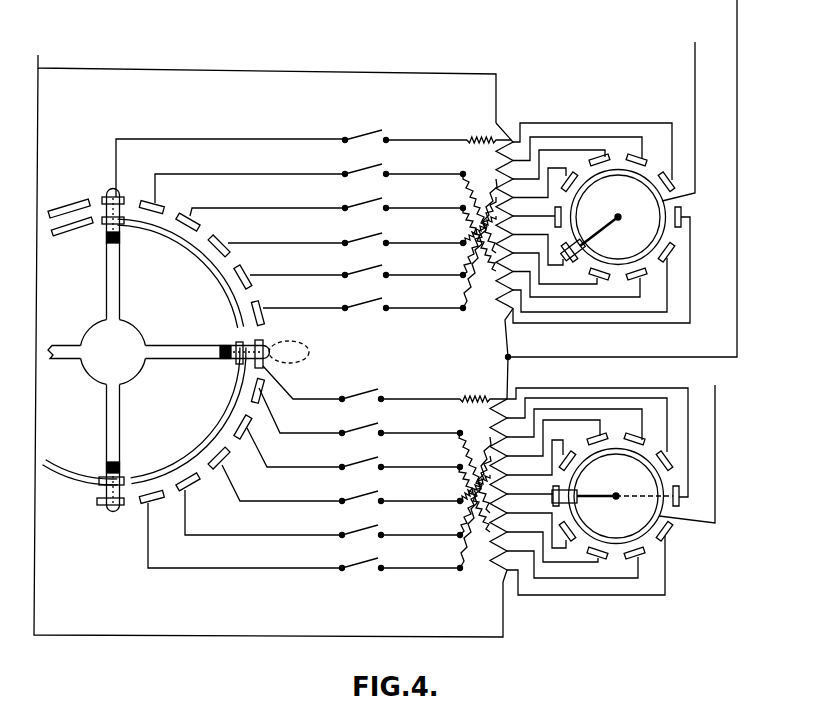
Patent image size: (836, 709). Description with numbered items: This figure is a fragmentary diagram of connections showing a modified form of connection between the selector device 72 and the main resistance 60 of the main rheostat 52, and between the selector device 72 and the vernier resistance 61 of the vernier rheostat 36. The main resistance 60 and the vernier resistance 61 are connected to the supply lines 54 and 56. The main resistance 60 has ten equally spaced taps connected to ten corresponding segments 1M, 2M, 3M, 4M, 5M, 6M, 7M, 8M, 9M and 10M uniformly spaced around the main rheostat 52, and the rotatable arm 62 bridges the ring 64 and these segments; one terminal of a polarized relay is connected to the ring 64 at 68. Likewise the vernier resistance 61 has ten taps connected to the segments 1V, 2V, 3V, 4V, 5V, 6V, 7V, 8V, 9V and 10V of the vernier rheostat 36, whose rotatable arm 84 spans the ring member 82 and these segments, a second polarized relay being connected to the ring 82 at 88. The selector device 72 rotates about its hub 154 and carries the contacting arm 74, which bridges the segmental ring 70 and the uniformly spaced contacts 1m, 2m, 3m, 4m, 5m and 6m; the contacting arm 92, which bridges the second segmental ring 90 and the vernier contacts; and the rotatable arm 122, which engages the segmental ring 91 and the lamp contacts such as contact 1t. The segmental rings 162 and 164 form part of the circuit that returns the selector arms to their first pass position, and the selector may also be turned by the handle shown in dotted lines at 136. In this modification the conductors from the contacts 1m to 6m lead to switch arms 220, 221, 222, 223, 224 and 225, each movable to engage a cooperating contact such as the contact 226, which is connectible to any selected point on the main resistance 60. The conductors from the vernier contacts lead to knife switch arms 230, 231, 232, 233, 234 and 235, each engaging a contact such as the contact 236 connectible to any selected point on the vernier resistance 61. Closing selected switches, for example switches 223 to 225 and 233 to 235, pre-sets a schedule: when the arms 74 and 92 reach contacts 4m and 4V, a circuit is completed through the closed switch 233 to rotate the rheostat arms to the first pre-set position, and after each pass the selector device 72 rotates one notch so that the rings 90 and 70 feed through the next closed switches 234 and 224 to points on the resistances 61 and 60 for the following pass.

The supply line 54 is at (38, 128).
The supply line 56 is at (737, 331).
The main resistance 60 is at (503, 127).
The vernier resistance 61 is at (500, 395).
The rotatable arm of the main rheostat 62 is at (600, 230).
The ring 64 is at (654, 242).
The connection point on ring 68 is at (663, 201).
The segmental ring 70 is at (204, 258).
The selector device 72 is at (160, 346).
The contacting rotatable arm 74 is at (120, 216).
The ring member 82 is at (600, 504).
The rotatable arm of the vernier rheostat 84 is at (594, 494).
The connection point on ring 88 is at (642, 464).
The second segmental ring 90 is at (232, 401).
The segmental ring 91 is at (76, 474).
The contacting arm 92 is at (240, 366).
The rotatable arm 122 is at (99, 482).
The handle 136 is at (288, 342).
The hub 154 is at (88, 330).
The segmental ring 162 is at (80, 204).
The segmental ring 164 is at (72, 232).
The contact 1m is at (119, 197).
The contact 2m is at (242, 194).
The contact 3m is at (260, 219).
The contact 4m is at (276, 246).
The contact 5m is at (289, 277).
The contact 6m is at (298, 314).
The segment 1V is at (266, 365).
The segment 2V is at (670, 542).
The segment 3V is at (632, 560).
The segment 4V is at (588, 554).
The segment 5V is at (566, 534).
The segment 6V is at (552, 497).
The segment 7V is at (565, 452).
The segment 8V is at (562, 431).
The segment 9V is at (585, 427).
The segment 10V is at (600, 434).
The segment 1M is at (682, 217).
The segment 2M is at (602, 277).
The segment 3M is at (588, 282).
The segment 4M is at (566, 275).
The segment 5M is at (545, 258).
The segment 6M is at (554, 219).
The segment 7M is at (570, 176).
The segment 8M is at (571, 159).
The segment 9M is at (591, 151).
The segment 10M is at (606, 157).
The contact 1t is at (100, 504).
The main rheostat 52 is at (622, 198).
The vernier rheostat 36 is at (628, 480).
The switch arm 220 is at (362, 135).
The switch arm 221 is at (356, 168).
The switch arm 222 is at (356, 203).
The switch arm 223 is at (356, 238).
The switch arm 224 is at (356, 271).
The switch arm 225 is at (356, 304).
The cooperating contact 226 is at (388, 137).
The knife switch 230 is at (360, 394).
The knife switch 231 is at (362, 428).
The knife switch 232 is at (362, 462).
The switch 233 is at (362, 496).
The switch 234 is at (362, 530).
The switch 235 is at (362, 563).
The cooperating contact 236 is at (386, 396).